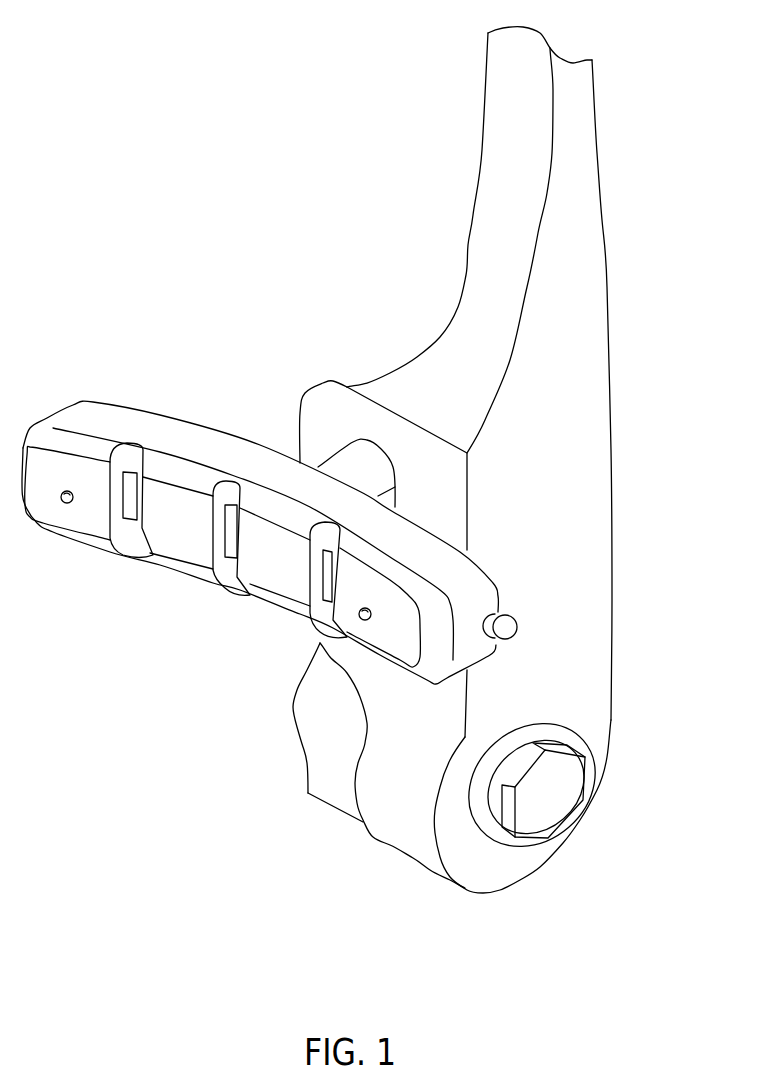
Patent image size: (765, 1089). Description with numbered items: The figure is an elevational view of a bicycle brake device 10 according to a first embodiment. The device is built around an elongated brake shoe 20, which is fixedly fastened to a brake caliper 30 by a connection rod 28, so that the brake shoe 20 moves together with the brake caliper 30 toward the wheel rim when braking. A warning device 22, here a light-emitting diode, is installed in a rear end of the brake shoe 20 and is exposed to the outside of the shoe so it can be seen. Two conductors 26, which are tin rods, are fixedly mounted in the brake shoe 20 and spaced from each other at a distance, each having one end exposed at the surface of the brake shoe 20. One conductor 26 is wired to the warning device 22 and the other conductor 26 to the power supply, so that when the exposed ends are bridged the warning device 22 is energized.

The bicycle brake device 10 is at (349, 460).
The brake shoe 20 is at (185, 433).
The warning device 22 is at (506, 633).
The conductors 26 is at (63, 505).
The connection rod 28 is at (352, 457).
The brake caliper 30 is at (592, 367).